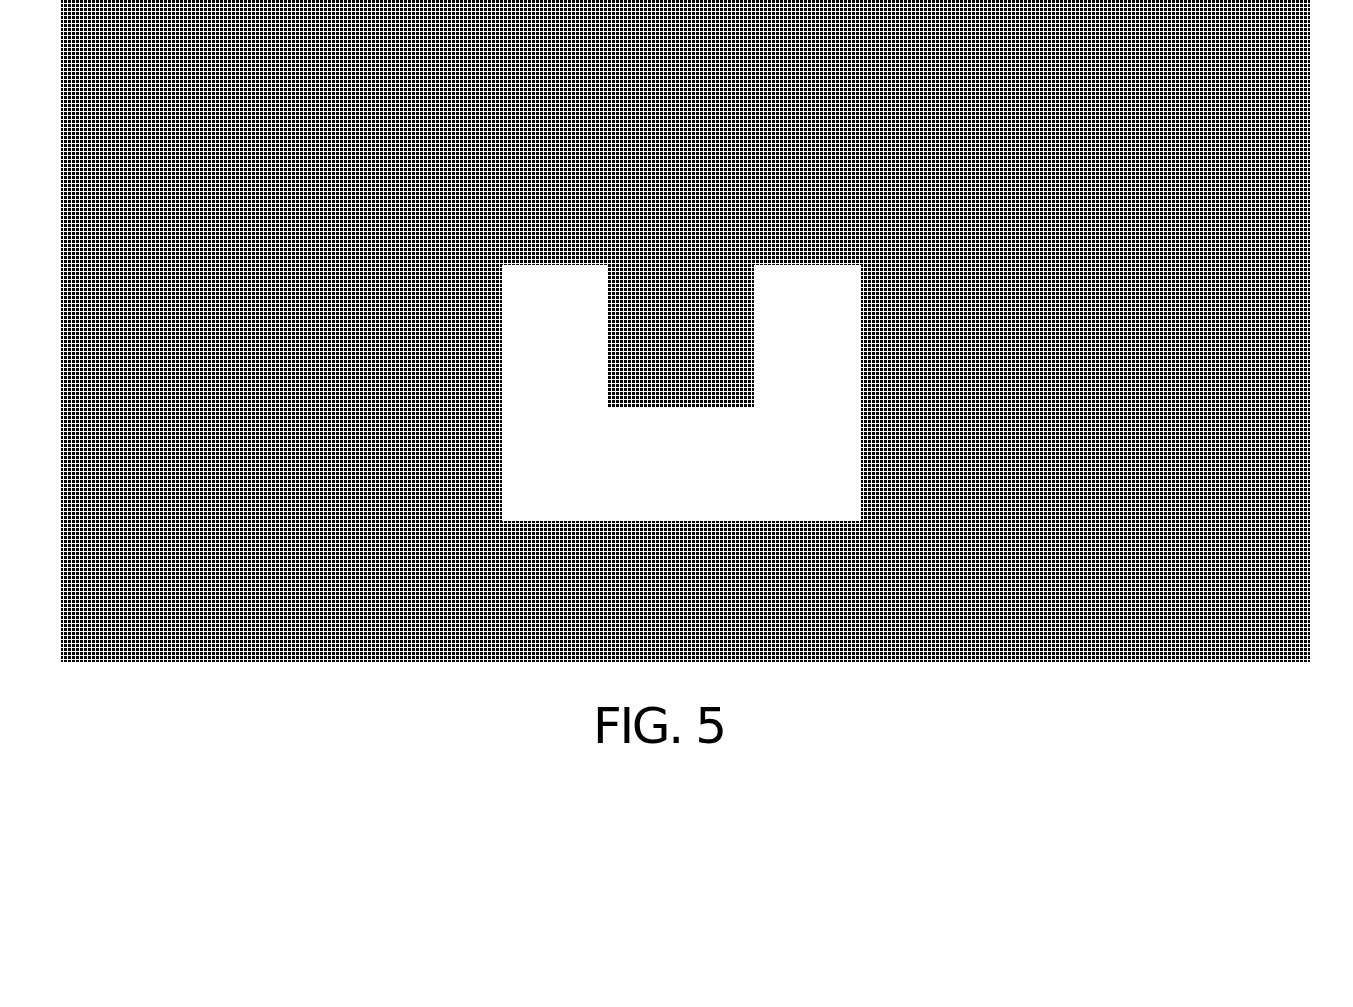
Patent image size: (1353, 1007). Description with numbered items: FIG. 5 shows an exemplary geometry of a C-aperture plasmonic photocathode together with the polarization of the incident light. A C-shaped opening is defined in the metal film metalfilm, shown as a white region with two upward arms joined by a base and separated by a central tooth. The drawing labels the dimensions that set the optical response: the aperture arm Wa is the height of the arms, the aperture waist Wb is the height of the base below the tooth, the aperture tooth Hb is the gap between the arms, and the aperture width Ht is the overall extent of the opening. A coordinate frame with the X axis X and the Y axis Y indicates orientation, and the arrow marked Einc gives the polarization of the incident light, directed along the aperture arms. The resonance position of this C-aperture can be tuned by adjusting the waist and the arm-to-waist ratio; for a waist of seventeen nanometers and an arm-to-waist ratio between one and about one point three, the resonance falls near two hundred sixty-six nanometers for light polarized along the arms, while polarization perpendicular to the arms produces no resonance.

The metal film metalfilm is at (685, 331).
The aperture arm Wa is at (503, 522).
The aperture waist Wb is at (862, 409).
The aperture tooth Hb is at (752, 336).
The aperture width Ht is at (861, 522).
The polarization of incident light Einc is at (1192, 292).
The X axis X is at (120, 503).
The Y axis Y is at (120, 503).